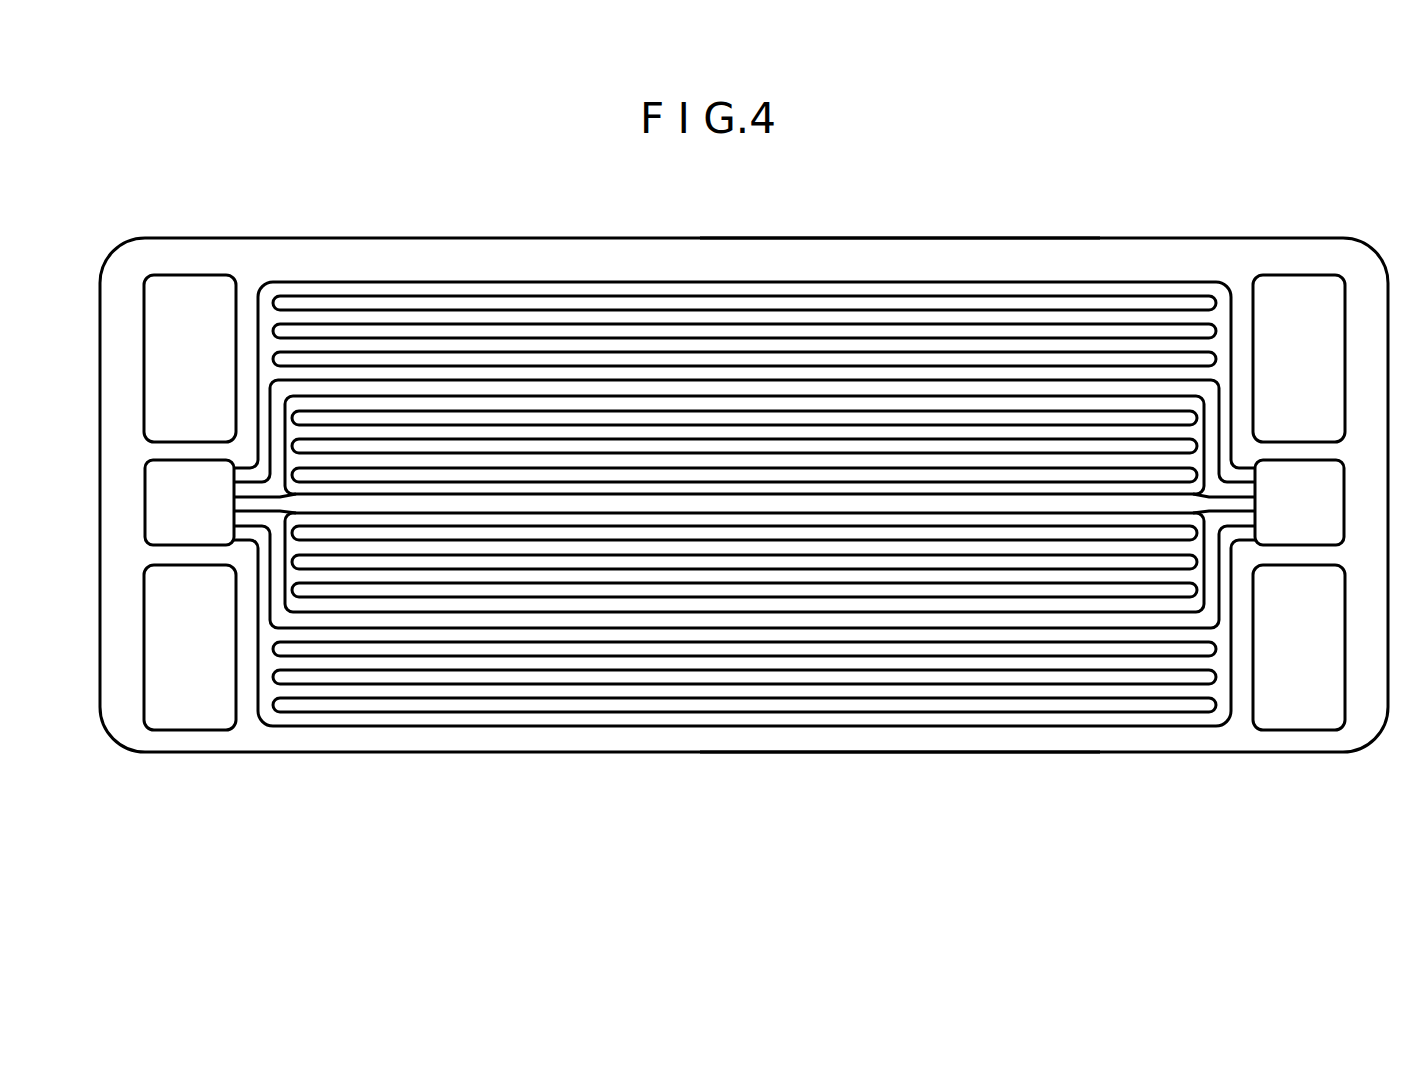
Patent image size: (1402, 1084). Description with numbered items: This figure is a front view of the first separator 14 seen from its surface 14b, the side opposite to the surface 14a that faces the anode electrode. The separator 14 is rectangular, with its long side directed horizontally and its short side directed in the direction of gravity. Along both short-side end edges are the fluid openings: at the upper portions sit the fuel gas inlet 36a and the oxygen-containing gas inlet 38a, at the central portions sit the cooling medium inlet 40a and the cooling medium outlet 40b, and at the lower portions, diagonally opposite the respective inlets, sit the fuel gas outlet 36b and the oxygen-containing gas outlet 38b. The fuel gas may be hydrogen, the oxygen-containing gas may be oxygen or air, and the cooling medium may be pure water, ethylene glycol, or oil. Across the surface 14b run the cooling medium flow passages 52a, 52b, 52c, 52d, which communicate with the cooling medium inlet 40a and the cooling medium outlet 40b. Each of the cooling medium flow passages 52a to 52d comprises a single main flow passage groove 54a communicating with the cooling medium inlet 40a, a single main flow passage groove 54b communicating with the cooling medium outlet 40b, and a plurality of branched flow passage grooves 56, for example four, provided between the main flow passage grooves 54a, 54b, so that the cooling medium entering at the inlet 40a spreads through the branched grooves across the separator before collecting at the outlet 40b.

The first separator 14 is at (866, 238).
The surface 14a is at (890, 740).
The surface 14b is at (1012, 258).
The fuel gas inlet 36a is at (1312, 339).
The fuel gas outlet 36b is at (196, 663).
The oxygen-containing gas inlet 38a is at (204, 339).
The oxygen-containing gas outlet 38b is at (1304, 663).
The cooling medium inlet 40a is at (196, 523).
The cooling medium outlet 40b is at (1304, 523).
The cooling medium flow passage 52a is at (488, 284).
The cooling medium flow passage 52b is at (600, 400).
The cooling medium flow passage 52c is at (733, 514).
The cooling medium flow passage 52d is at (503, 729).
The main flow passage groove 54a is at (258, 492).
The main flow passage groove 54b is at (1225, 490).
The branched flow passage grooves 56 is at (372, 316).